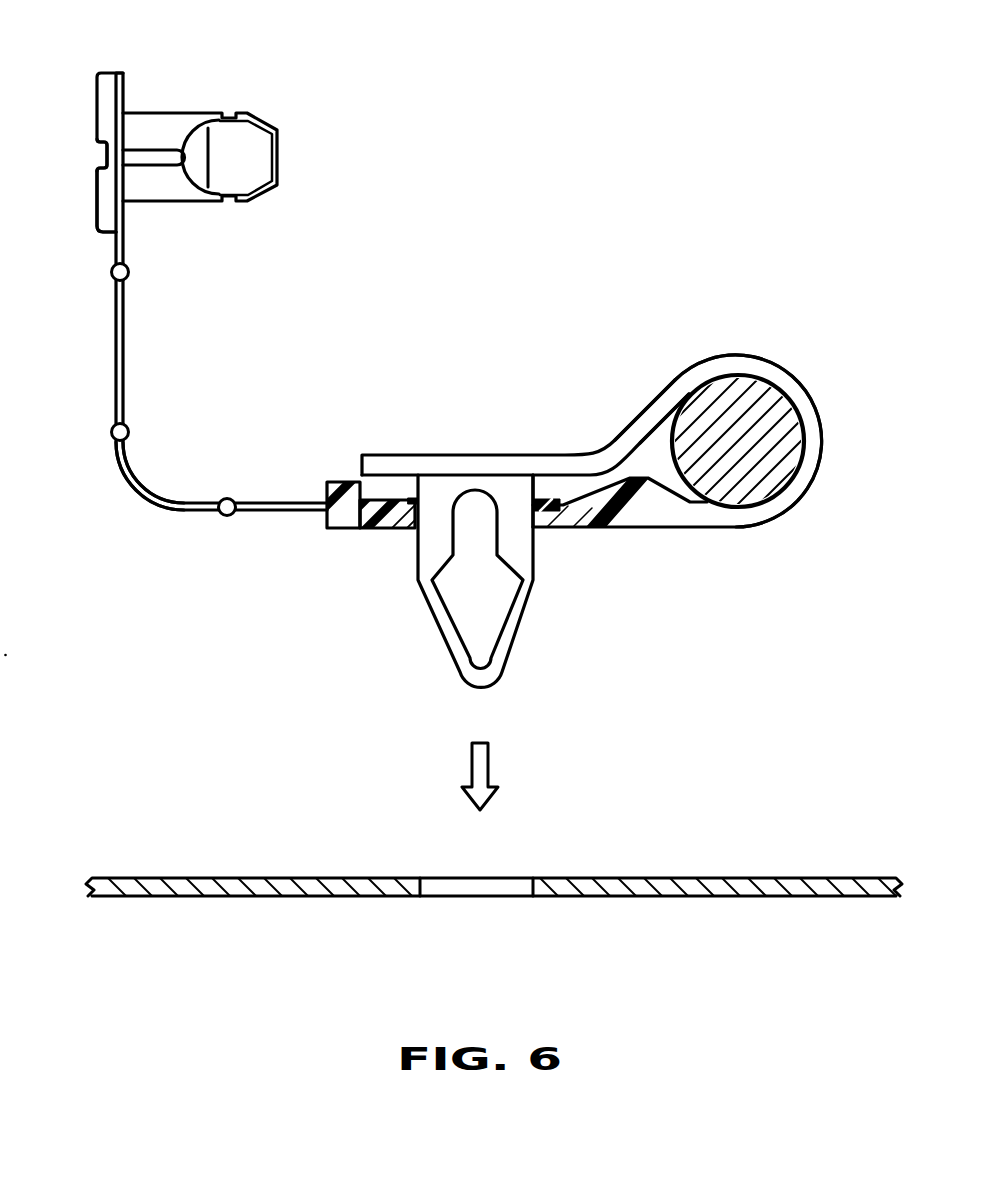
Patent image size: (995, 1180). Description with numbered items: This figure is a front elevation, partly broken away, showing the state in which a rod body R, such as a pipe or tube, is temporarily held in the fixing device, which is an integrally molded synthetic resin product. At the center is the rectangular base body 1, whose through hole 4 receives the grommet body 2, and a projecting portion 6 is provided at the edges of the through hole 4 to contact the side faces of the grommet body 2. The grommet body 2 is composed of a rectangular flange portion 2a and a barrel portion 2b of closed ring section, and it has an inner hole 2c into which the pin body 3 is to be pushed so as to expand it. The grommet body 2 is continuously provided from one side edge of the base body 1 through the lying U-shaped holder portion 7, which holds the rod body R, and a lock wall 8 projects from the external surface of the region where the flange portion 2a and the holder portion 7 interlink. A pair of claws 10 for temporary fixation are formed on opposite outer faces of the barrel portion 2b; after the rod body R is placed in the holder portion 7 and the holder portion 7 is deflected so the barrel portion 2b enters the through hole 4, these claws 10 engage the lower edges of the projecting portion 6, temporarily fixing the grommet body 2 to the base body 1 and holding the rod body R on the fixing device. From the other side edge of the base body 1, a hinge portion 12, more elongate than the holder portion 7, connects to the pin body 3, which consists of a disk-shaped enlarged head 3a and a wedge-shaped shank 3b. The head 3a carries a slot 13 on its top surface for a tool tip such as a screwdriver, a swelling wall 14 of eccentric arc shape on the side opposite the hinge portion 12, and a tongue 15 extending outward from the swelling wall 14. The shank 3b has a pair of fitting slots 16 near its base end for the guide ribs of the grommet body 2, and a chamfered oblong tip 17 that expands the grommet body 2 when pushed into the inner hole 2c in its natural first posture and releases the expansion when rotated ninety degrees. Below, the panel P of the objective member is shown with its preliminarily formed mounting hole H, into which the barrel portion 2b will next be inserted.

The base body 1 is at (328, 528).
The grommet body 2 is at (643, 510).
The flange portion 2a is at (435, 460).
The barrel portion 2b is at (500, 647).
The inner hole 2c is at (470, 608).
The pin body 3 is at (237, 144).
The enlarged head 3a is at (108, 218).
The shank 3b is at (167, 182).
The through hole 4 is at (542, 497).
The projecting portion 6 is at (385, 527).
The holder portion 7 is at (770, 374).
The lock wall 8 is at (622, 428).
The claws for temporary fixation 10 is at (410, 508).
The hinge portion 12 is at (152, 504).
The slot 13 is at (107, 153).
The swelling wall 14 is at (121, 87).
The tongue 15 is at (100, 72).
The fitting slots 16 is at (166, 157).
The oblong tip 17 is at (265, 163).
The rod body R is at (790, 445).
The mounting hole H is at (481, 888).
The panel P is at (775, 888).